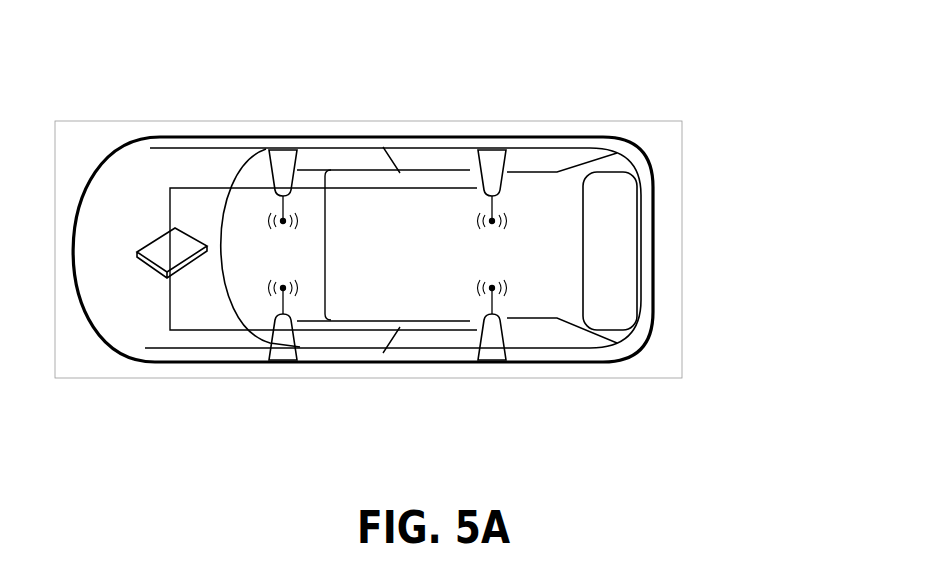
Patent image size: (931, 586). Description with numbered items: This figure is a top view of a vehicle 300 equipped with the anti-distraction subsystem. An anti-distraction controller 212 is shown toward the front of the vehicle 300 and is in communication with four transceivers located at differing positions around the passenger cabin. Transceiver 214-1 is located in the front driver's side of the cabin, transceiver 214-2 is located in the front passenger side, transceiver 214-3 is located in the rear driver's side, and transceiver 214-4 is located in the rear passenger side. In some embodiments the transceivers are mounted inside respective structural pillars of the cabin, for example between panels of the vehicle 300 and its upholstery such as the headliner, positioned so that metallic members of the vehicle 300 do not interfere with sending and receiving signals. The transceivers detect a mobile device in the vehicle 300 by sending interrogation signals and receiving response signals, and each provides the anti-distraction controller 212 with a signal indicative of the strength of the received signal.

The vehicle 300 is at (667, 258).
The anti-distraction controller 212 is at (157, 240).
The transceiver 214-1 is at (287, 343).
The transceiver 214-2 is at (283, 167).
The transceiver 214-3 is at (497, 343).
The transceiver 214-4 is at (478, 163).